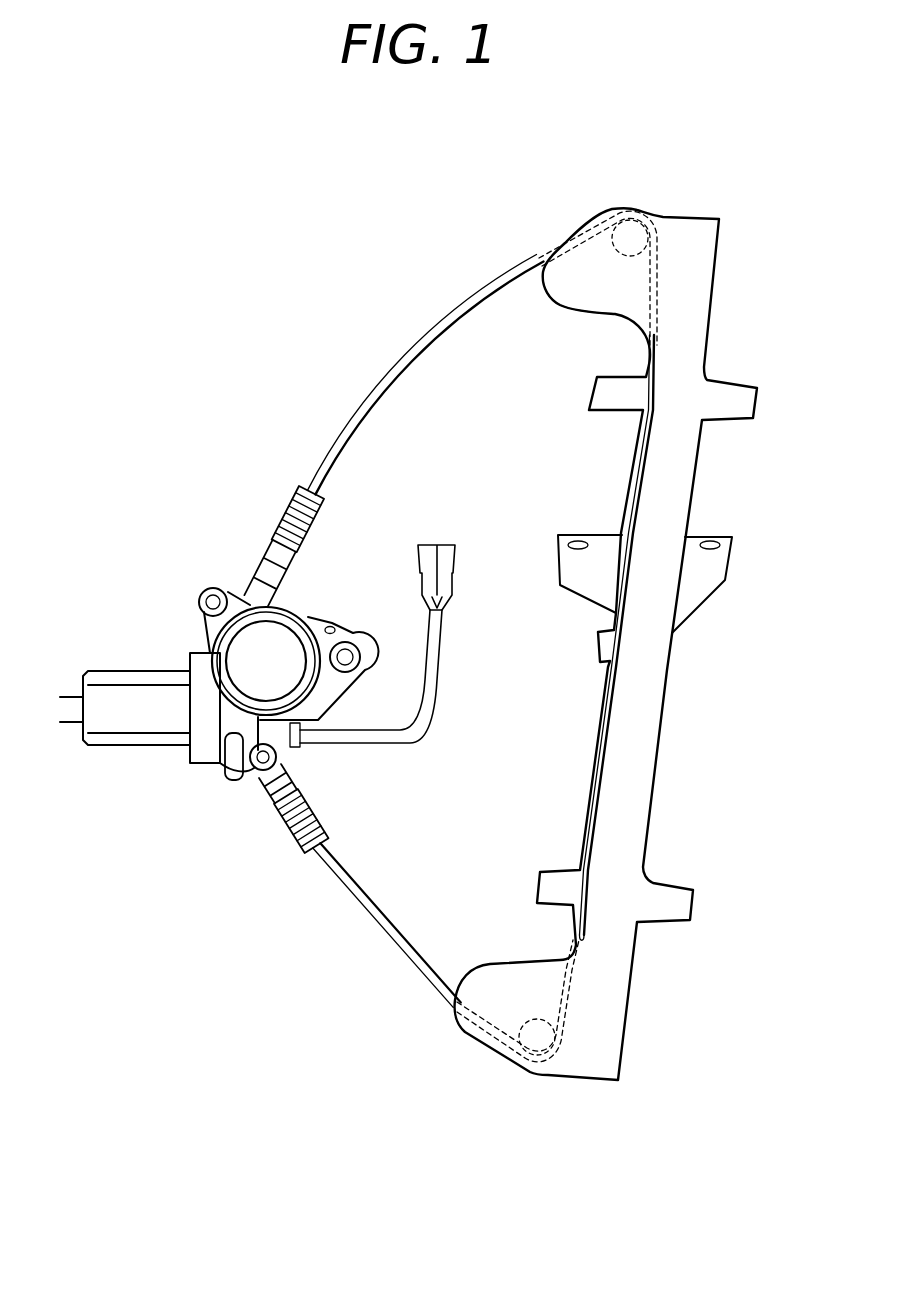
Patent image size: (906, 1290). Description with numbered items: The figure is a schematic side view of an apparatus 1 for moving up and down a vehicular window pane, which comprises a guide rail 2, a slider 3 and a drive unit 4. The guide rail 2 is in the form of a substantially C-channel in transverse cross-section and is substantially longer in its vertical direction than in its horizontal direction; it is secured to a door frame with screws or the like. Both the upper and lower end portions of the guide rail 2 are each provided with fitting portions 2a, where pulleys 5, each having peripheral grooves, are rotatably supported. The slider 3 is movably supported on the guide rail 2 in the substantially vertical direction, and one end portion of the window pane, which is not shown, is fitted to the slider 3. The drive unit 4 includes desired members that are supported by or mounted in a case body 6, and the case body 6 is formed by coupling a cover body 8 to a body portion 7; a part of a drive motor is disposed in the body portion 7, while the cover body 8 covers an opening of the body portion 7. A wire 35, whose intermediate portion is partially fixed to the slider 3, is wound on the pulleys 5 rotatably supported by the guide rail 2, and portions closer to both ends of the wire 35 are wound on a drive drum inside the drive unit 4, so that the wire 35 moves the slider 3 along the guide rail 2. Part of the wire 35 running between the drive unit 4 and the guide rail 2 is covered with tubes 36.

The apparatus for moving up and down a vehicular window pane 1 is at (767, 294).
The guide rail 2 is at (650, 748).
The fitting portions 2a is at (568, 310).
The slider 3 is at (712, 565).
The drive unit 4 is at (172, 557).
The pulleys 5 is at (597, 232).
The case body 6 is at (149, 740).
The body portion 7 is at (143, 692).
The cover body 8 is at (250, 642).
The wire 35 is at (592, 746).
The tubes 36 is at (385, 392).